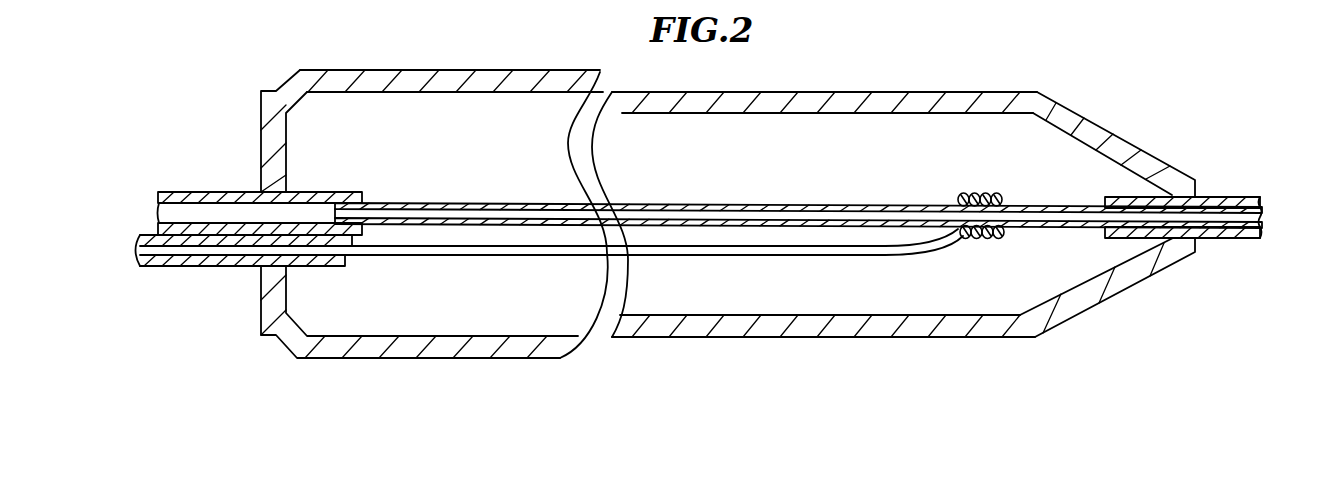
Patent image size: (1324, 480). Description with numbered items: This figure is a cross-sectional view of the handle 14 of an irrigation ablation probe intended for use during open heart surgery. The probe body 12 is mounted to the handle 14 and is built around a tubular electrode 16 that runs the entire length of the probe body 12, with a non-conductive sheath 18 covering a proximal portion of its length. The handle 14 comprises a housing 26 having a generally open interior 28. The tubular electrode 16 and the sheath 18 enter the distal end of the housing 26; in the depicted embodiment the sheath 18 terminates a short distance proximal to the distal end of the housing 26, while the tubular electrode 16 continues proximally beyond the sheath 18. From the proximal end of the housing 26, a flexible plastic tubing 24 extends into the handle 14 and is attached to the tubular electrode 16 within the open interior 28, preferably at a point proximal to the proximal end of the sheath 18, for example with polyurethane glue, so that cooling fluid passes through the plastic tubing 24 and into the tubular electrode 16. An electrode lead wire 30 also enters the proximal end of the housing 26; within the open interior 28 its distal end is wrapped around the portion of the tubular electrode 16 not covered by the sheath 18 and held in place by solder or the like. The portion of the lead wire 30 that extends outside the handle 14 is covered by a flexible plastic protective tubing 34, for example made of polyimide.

The probe body 12 is at (1240, 187).
The handle 14 is at (1027, 80).
The tubular electrode 16 is at (1073, 229).
The sheath 18 is at (1225, 197).
The flexible plastic tubing 24 is at (200, 192).
The housing 26 is at (745, 332).
The open interior 28 is at (907, 302).
The electrode lead wire 30 is at (466, 254).
The flexible plastic protective tubing 34 is at (234, 268).